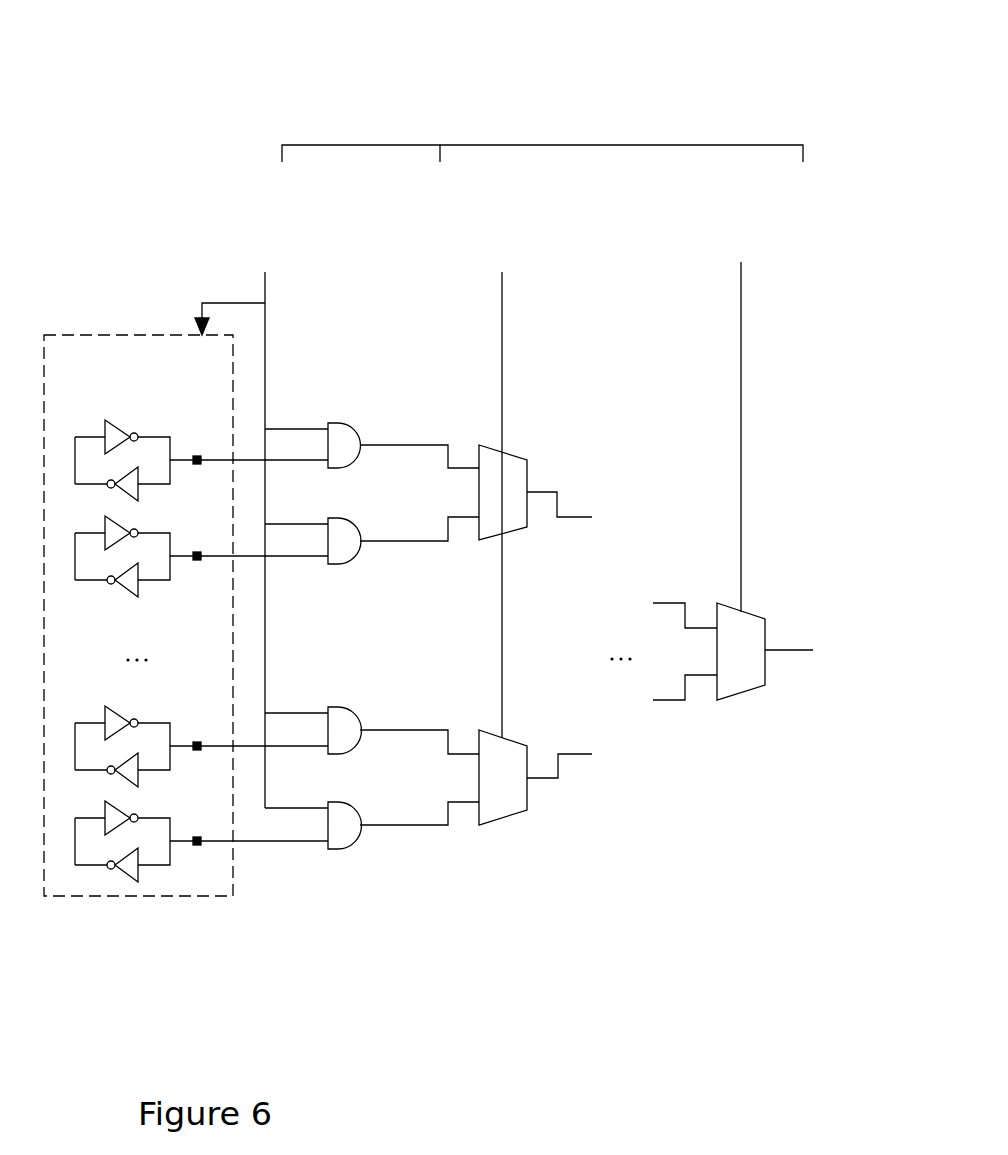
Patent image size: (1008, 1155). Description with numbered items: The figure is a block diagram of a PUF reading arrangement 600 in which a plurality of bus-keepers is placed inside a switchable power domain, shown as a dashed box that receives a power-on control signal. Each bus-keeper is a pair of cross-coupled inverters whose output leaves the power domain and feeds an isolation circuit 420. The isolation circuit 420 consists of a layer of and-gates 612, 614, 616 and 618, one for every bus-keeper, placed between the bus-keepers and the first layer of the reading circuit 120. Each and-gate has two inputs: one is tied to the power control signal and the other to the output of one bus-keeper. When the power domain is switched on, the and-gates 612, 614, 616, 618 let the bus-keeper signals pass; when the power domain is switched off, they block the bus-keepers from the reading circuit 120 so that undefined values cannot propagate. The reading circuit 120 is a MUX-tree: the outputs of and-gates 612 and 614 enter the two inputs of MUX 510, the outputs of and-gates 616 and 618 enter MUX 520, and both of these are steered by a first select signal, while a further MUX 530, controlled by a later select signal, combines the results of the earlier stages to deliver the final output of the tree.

The circuit 600 is at (870, 816).
The isolation circuit 420 is at (361, 91).
The reading circuit 120 is at (621, 110).
The AND gate 612 is at (341, 440).
The AND gate 614 is at (342, 540).
The AND gate 616 is at (341, 725).
The AND gate 618 is at (341, 830).
The MUX 510 is at (528, 467).
The MUX 520 is at (518, 798).
The MUX 530 is at (754, 622).